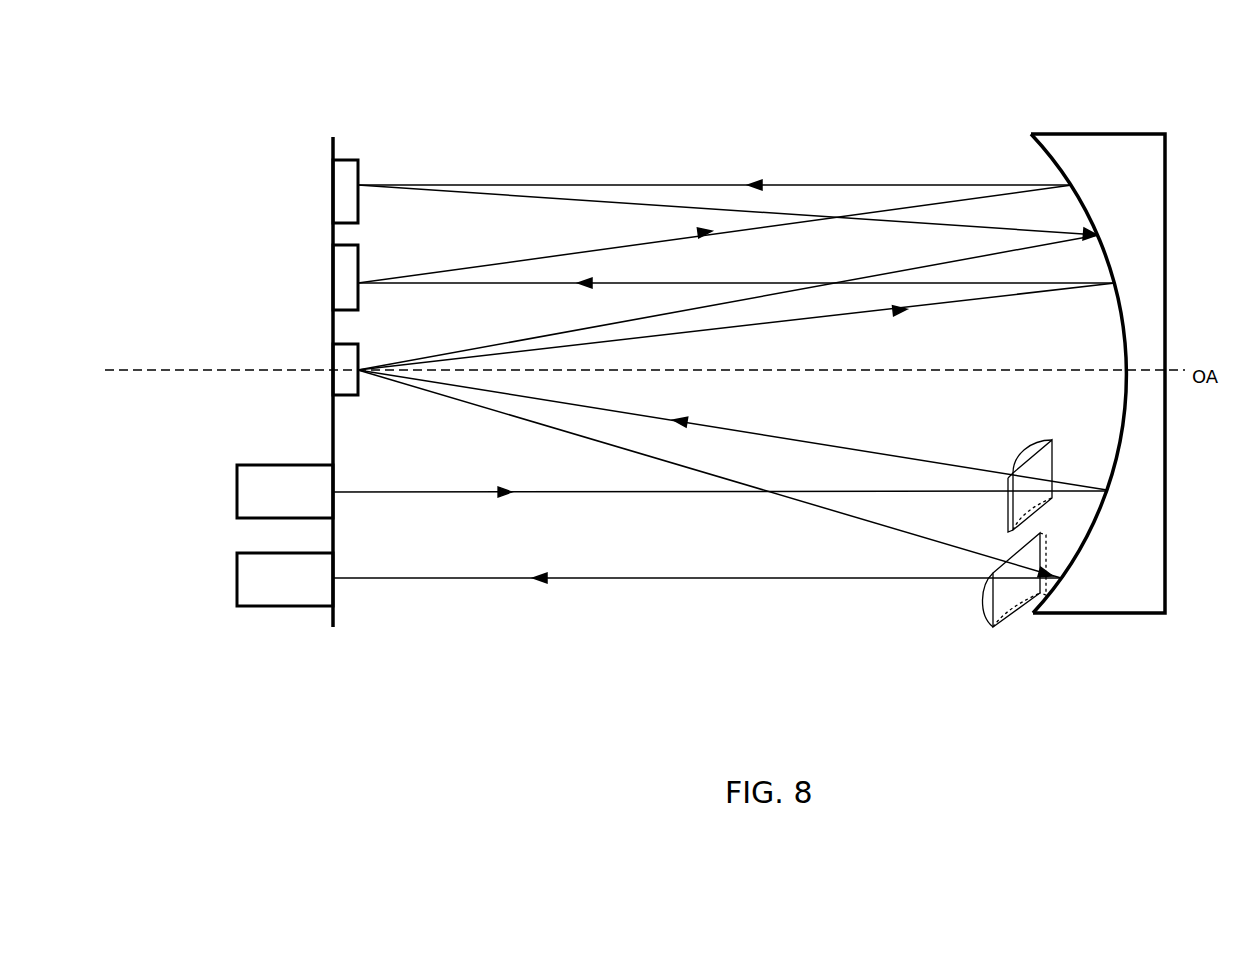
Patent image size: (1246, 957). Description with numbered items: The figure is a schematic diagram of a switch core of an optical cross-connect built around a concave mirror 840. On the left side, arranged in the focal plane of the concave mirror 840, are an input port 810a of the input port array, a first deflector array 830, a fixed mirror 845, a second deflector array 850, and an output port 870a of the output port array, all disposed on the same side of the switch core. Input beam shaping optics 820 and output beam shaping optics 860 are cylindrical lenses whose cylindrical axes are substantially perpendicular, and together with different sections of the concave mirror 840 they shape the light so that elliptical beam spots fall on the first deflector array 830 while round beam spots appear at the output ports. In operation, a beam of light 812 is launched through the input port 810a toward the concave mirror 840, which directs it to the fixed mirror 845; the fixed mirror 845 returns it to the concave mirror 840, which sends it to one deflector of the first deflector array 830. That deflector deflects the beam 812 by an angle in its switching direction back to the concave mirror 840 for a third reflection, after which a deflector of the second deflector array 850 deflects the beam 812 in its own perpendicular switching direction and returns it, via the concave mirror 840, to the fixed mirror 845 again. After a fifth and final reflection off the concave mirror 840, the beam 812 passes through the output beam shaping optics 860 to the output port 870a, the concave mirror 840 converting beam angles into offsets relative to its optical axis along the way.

The first input port 810a is at (237, 492).
The beam of light 812 is at (575, 492).
The input beam shaping optics 820 is at (1062, 522).
The first deflector array 830 is at (333, 270).
The concave mirror 840 is at (1090, 133).
The fixed mirror 845 is at (333, 378).
The second deflector array 850 is at (355, 160).
The output beam shaping optics 860 is at (995, 650).
The output port 870a is at (308, 607).